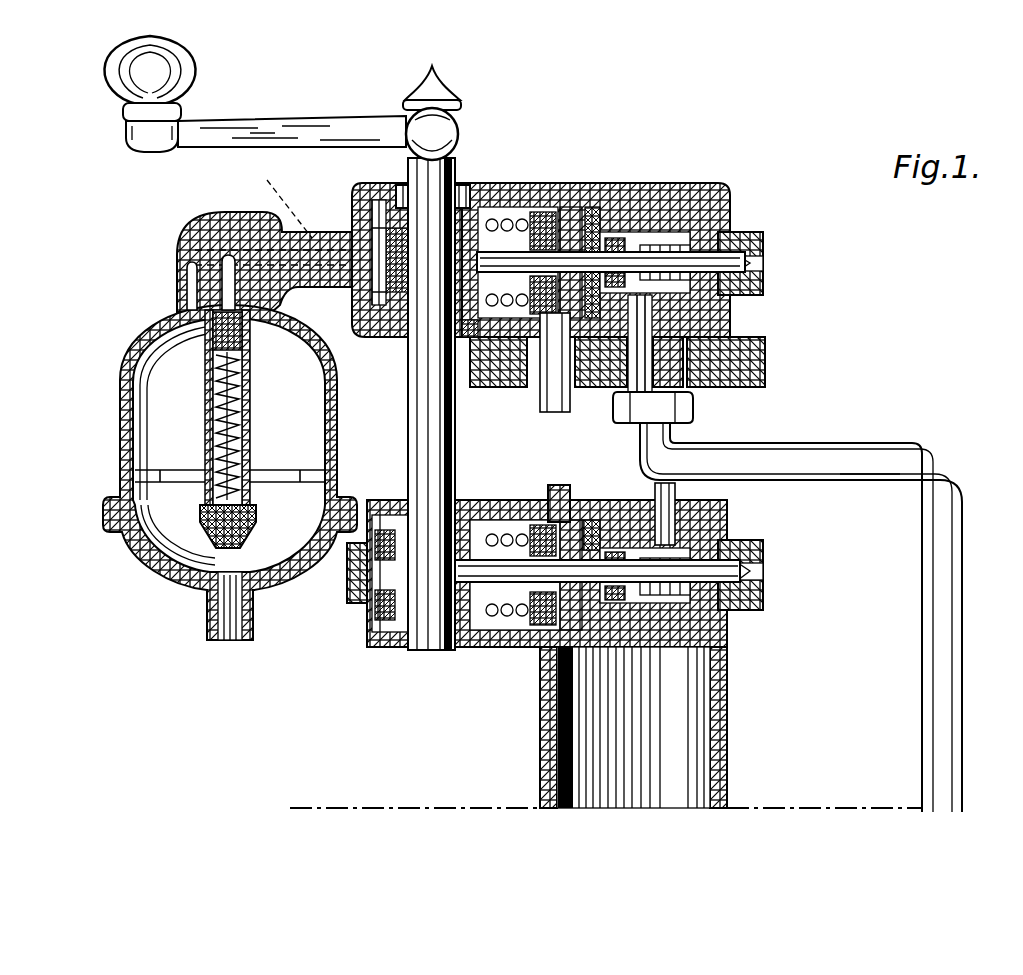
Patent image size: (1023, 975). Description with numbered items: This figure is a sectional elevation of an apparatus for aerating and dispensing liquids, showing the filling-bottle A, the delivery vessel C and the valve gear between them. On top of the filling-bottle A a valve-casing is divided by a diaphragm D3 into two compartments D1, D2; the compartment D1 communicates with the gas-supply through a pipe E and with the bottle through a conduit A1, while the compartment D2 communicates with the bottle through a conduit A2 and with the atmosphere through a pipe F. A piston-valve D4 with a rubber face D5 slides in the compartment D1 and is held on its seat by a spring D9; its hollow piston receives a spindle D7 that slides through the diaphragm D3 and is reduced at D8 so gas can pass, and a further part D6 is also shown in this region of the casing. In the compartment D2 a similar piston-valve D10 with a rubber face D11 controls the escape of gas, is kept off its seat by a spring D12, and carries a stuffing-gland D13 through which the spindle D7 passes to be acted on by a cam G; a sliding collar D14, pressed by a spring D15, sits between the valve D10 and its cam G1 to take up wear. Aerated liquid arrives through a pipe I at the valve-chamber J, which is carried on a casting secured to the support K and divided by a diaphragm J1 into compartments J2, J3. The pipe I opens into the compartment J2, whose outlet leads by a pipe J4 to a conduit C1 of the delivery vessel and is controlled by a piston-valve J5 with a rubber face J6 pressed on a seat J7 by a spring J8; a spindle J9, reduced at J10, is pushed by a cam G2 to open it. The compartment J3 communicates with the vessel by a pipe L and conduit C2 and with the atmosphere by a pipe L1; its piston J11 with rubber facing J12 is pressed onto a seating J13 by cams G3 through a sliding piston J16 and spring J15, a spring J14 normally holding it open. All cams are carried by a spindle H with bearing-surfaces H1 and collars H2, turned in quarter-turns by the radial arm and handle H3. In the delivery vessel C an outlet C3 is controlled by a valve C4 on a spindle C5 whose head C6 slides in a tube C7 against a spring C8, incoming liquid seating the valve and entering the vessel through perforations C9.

The filling-bottle A is at (714, 740).
The conduit A1 is at (592, 677).
The conduit A2 is at (600, 712).
The delivery vessel C is at (338, 456).
The conduit C1 is at (190, 298).
The conduit C2 is at (190, 290).
The outlet C3 is at (232, 642).
The valve C4 is at (195, 545).
The spindle C5 is at (235, 440).
The head or piston C6 is at (215, 350).
The tube C7 is at (250, 398).
The spring C8 is at (250, 440).
The perforations C9 is at (200, 517).
The compartment D1 is at (724, 540).
The compartment D2 is at (490, 660).
The diaphragm or partition D3 is at (700, 478).
The piston-valve D4 is at (765, 608).
The rubber face D5 is at (682, 600).
The spring D6 is at (628, 630).
The spindle D7 is at (500, 648).
The reduced portion of spindle D8 is at (765, 552).
The spring D9 is at (765, 585).
The piston-valve D10 is at (532, 648).
The rubber face D11 is at (557, 543).
The spring D12 is at (535, 512).
The stuffing-gland D13 is at (473, 648).
The sliding collar or piston D14 is at (425, 648).
The spring D15 is at (458, 648).
The pipe E is at (653, 492).
The pipe F is at (590, 468).
The cam G is at (367, 605).
The cam G1 is at (360, 565).
The cam G2 is at (392, 337).
The cams G3 is at (385, 237).
The spindle H is at (428, 450).
The bearing-surfaces H1 is at (380, 648).
The bearing surfaces or collars H2 is at (470, 212).
The radial arm and handle H3 is at (202, 140).
The pipe I is at (850, 482).
The valve-chamber J is at (720, 185).
The diaphragm or partition J1 is at (585, 252).
The compartment J2 is at (705, 282).
The compartment J3 is at (543, 225).
The pipe J4 is at (271, 198).
The piston-valve J5 is at (740, 372).
The rubber face J6 is at (760, 265).
The seat J7 is at (742, 250).
The spring J8 is at (722, 300).
The spindle J9 is at (690, 232).
The reduced portion of spindle J10 is at (740, 215).
The piston J11 is at (527, 388).
The rubber facing J12 is at (575, 245).
The seating J13 is at (640, 425).
The spring J14 is at (620, 245).
The spring J15 is at (500, 222).
The sliding piston J16 is at (400, 233).
The support K is at (695, 415).
The pipe L is at (264, 278).
The pipe L1 is at (572, 395).